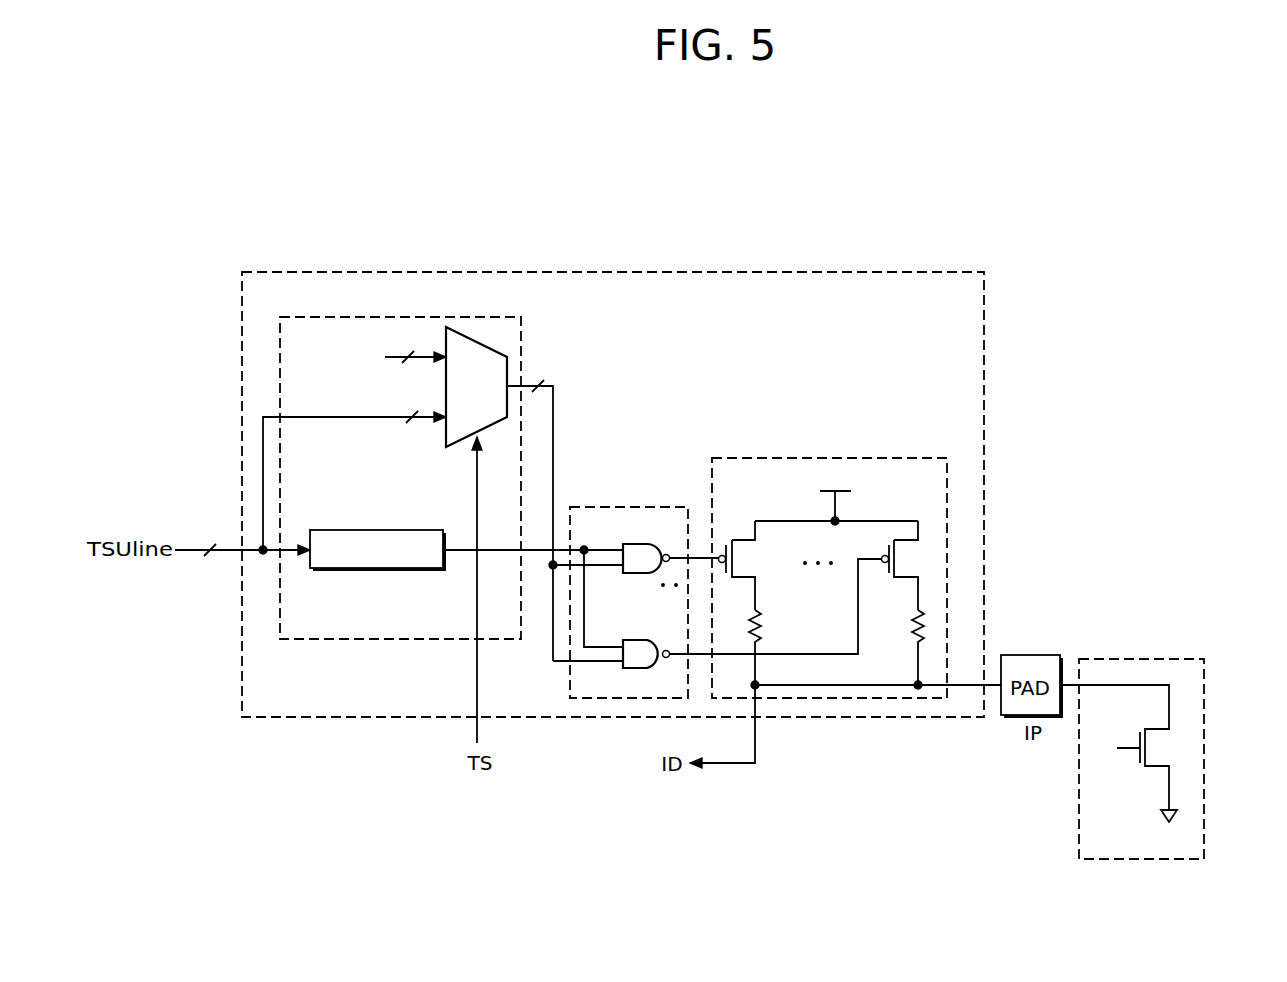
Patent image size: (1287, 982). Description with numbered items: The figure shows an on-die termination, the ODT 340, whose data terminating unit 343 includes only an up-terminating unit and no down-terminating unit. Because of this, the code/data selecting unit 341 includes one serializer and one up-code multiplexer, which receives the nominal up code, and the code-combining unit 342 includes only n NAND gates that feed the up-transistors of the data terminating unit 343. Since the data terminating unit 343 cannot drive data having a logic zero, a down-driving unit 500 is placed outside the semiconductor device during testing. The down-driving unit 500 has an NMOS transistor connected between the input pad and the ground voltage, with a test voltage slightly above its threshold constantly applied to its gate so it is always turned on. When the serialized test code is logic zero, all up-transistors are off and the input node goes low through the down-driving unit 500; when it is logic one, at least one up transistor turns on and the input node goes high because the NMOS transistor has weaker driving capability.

The ODT 340 is at (924, 272).
The code/data selecting unit 341 is at (489, 317).
The code-combining unit 342 is at (670, 507).
The data terminating unit 343 is at (915, 458).
The down-driving unit 500 is at (1172, 659).